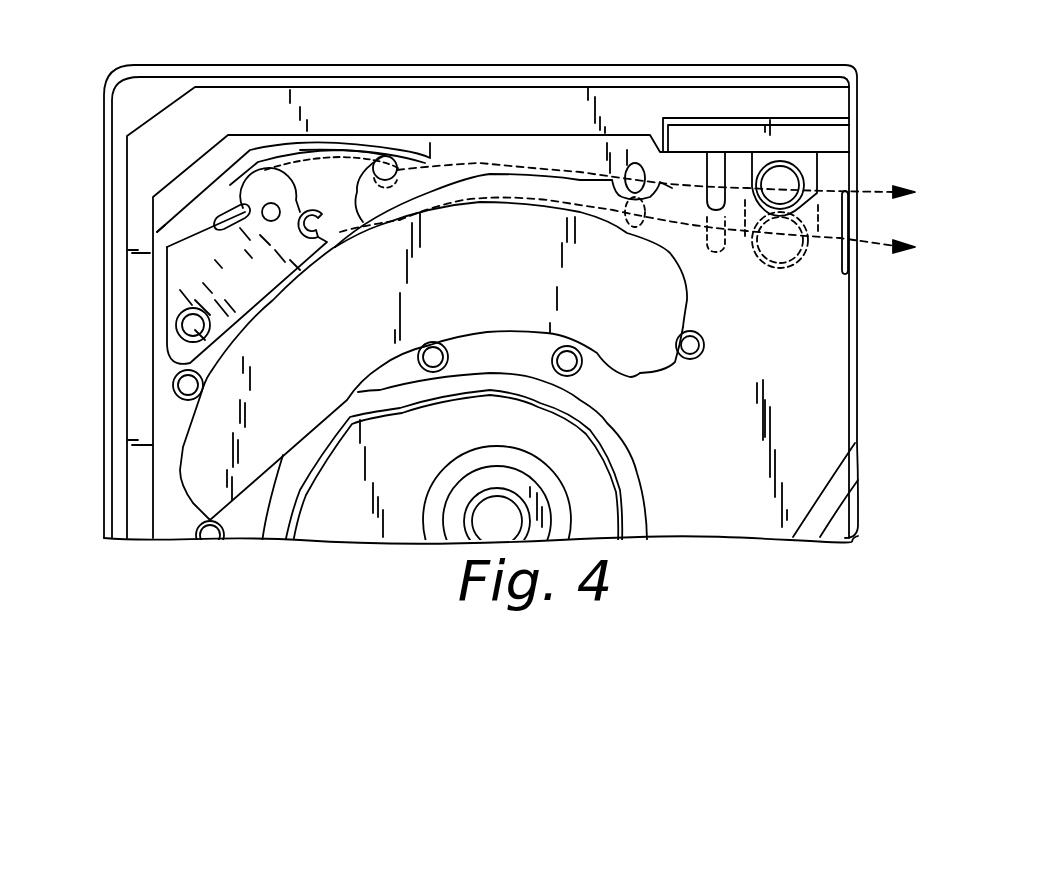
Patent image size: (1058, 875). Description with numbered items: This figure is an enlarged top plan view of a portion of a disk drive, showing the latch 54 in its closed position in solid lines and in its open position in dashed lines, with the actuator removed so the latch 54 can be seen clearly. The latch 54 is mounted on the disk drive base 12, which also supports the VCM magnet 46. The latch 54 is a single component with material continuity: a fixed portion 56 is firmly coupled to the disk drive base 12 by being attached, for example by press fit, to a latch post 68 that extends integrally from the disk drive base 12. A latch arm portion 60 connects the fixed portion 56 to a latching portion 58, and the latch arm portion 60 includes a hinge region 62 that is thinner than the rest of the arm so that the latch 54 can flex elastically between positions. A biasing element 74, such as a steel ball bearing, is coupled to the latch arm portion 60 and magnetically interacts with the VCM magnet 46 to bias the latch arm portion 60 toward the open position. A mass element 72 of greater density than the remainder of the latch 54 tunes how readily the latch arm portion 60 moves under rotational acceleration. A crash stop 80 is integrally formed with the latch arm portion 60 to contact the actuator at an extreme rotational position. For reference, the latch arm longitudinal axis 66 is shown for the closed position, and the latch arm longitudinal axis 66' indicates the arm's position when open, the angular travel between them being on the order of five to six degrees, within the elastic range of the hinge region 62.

The disk drive base 12 is at (400, 80).
The VCM magnet 46 is at (322, 374).
The latch 54 is at (181, 262).
The fixed portion 56 is at (250, 278).
The latching portion 58 is at (630, 163).
The latch arm portion 60 is at (558, 156).
The hinge region 62 is at (287, 150).
The latch arm longitudinal axis 66 is at (656, 164).
The latch arm longitudinal axis in open position 66' is at (627, 249).
The latch post 68 is at (263, 206).
The mass element 72 is at (780, 172).
The biasing element 74 is at (383, 162).
The crash stop 80 is at (717, 157).